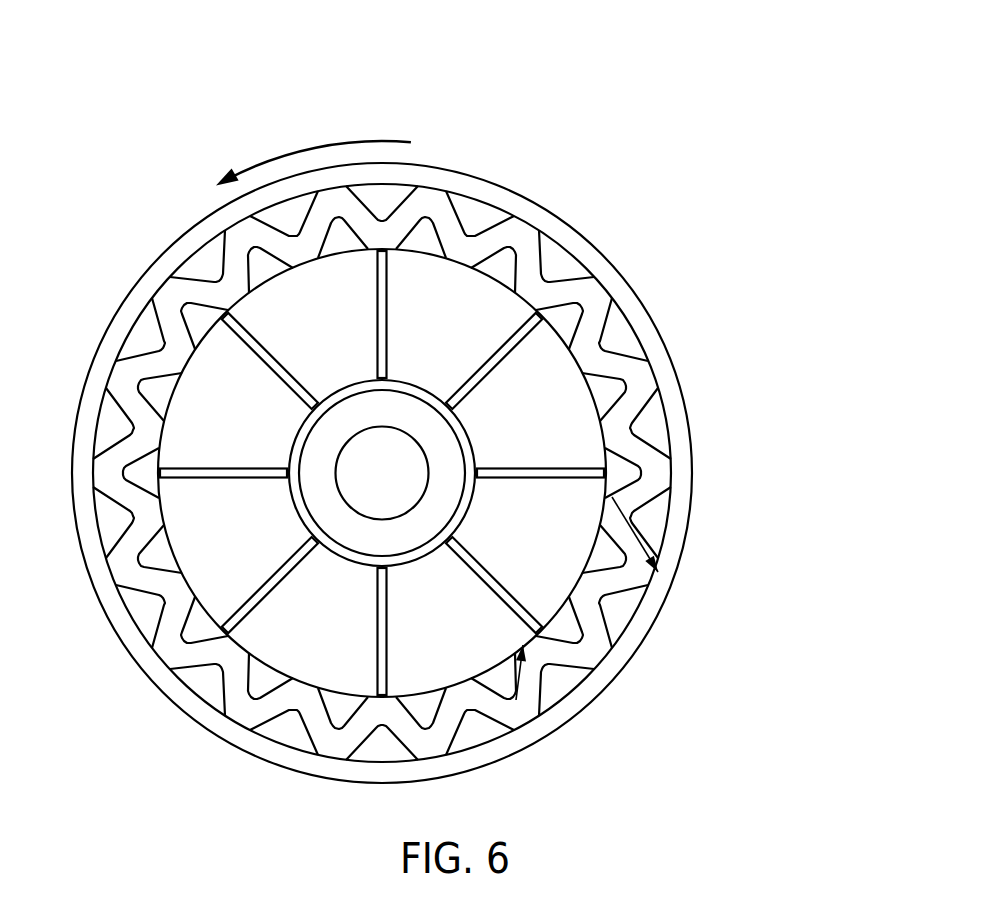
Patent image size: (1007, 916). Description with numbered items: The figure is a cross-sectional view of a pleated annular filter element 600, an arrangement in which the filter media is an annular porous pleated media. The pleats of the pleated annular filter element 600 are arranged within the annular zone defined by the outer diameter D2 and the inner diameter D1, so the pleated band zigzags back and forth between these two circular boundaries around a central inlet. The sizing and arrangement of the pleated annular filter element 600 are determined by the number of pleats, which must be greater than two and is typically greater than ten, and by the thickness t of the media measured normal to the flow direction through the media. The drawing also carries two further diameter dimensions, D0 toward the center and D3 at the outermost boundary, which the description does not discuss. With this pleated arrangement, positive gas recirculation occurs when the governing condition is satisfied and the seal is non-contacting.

The pleated annular filter element 600 is at (190, 78).
The hub inlet diameter D0 is at (45, 392).
The inner diameter D1 is at (418, 249).
The outer diameter D2 is at (418, 185).
The housing outer diameter D3 is at (418, 165).
The thickness of the media t is at (587, 432).